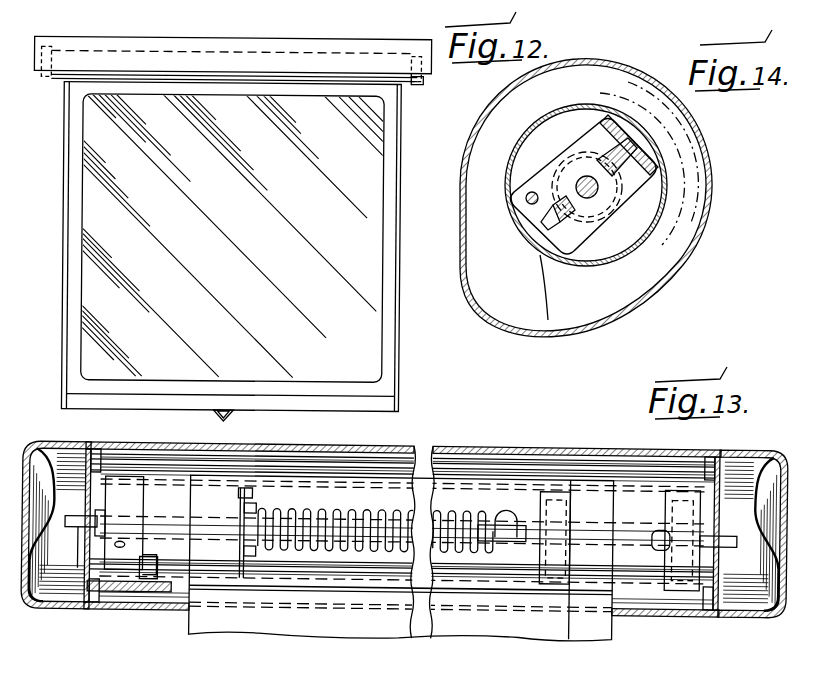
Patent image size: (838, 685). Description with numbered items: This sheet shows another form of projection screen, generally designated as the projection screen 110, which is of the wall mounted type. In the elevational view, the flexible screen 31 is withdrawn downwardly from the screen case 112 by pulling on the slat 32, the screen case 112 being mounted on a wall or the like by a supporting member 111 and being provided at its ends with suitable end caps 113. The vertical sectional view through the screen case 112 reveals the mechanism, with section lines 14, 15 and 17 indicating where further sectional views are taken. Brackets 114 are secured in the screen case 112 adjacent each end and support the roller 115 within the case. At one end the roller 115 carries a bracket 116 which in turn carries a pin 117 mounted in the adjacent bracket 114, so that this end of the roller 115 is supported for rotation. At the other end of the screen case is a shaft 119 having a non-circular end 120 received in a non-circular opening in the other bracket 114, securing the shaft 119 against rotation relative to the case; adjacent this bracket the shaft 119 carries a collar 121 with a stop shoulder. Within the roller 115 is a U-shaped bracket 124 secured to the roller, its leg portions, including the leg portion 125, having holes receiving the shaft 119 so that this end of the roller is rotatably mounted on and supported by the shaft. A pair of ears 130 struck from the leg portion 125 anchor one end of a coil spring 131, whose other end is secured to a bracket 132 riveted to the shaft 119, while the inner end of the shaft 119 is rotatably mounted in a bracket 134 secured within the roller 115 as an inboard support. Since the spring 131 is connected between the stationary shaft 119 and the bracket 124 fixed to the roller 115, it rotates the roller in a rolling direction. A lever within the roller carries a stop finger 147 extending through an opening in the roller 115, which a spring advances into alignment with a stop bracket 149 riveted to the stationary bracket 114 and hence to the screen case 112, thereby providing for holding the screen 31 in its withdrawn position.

In FIG. 12, the flexible screen 31 is at (393, 263).
In FIG. 13, the flexible screen 31 is at (610, 630).
In FIG. 12, the slat 32 is at (383, 403).
In FIG. 12, the projection screen 110 is at (408, 153).
In FIG. 12, the supporting member 111 is at (325, 44).
In FIG. 12, the screen case 112 is at (320, 78).
In FIG. 14, the screen case 112 is at (703, 142).
In FIG. 13, the screen case 112 is at (394, 452).
In FIG. 12, the end caps 113 is at (47, 79).
In FIG. 13, the end caps 113 is at (48, 448).
In FIG. 13, the brackets 114 is at (92, 458).
In FIG. 14, the roller 115 is at (660, 228).
In FIG. 13, the roller 115 is at (647, 490).
In FIG. 13, the bracket 116 is at (665, 590).
In FIG. 13, the pin 117 is at (728, 557).
In FIG. 14, the shaft 119 is at (578, 182).
In FIG. 13, the shaft 119 is at (530, 540).
In FIG. 13, the non-circular end 120 is at (42, 607).
In FIG. 13, the collar 121 is at (104, 511).
In FIG. 14, the U-shaped bracket 124 is at (512, 196).
In FIG. 14, the leg portion 125 is at (580, 238).
In FIG. 14, the ears 130 is at (653, 128).
In FIG. 13, the ears 130 is at (257, 510).
In FIG. 14, the coil spring 131 is at (600, 208).
In FIG. 13, the bracket 132 is at (520, 527).
In FIG. 13, the bracket 134 is at (537, 588).
In FIG. 13, the stop finger 147 is at (146, 584).
In FIG. 13, the stop bracket 149 is at (110, 592).
In FIG. 13, the section line 14 is at (262, 432).
In FIG. 13, the section line 15 is at (523, 427).
In FIG. 14, the section line 17 is at (560, 47).